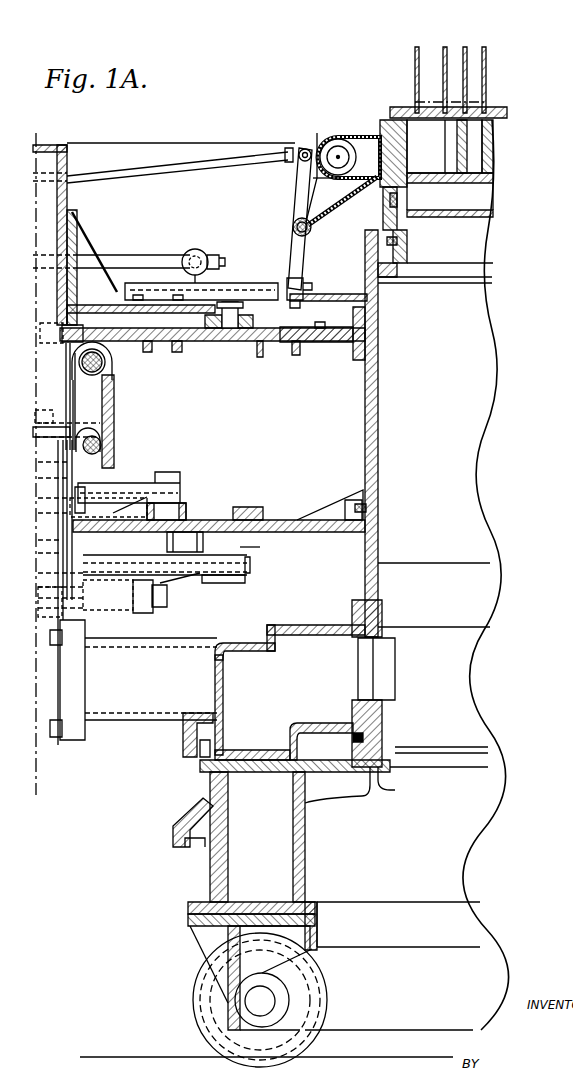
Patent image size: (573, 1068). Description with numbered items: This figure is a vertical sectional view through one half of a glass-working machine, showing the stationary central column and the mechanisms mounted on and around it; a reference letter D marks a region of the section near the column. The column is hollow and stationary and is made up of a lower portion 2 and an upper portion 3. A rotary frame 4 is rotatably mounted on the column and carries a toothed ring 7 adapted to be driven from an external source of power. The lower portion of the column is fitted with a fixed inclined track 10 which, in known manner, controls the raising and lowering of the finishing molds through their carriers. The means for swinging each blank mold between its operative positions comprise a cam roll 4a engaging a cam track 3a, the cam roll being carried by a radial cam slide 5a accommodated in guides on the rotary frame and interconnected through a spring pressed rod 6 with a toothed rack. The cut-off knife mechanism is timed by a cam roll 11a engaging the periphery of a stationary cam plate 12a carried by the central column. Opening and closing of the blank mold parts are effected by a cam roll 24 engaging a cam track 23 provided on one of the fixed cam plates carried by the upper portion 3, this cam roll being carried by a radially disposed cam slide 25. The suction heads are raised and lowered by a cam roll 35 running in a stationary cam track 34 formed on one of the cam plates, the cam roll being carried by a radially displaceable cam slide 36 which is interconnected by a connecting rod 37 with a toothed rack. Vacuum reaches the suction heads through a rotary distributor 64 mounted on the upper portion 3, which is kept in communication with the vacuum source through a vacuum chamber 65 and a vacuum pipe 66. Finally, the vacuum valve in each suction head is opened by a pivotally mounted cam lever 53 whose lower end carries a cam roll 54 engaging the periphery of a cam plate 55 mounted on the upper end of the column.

The lower portion of the central column 2 is at (230, 823).
The upper portion of the central column 3 is at (380, 425).
The cam track 3a is at (240, 547).
The rotary frame 4 is at (187, 680).
The cam roll 4a is at (170, 541).
The radial cam slide 5a is at (173, 588).
The spring pressed rod 6 is at (147, 598).
The toothed ring 7 is at (185, 752).
The fixed inclined track 10 is at (180, 822).
The cam roll 11a is at (78, 326).
The stationary cam plate 12a is at (106, 351).
The cam track 23 is at (197, 517).
The cam roll 24 is at (183, 503).
The radially disposed cam slide 25 is at (128, 483).
The stationary cam track 34 is at (264, 343).
The cam roll 35 is at (215, 343).
The radially displaceable cam slide 36 is at (201, 250).
The connecting rod 37 is at (127, 257).
The cam lever 53 is at (296, 252).
The cam roll 54 is at (318, 344).
The cam plate 55 is at (323, 294).
The rotary distributor 64 is at (380, 119).
The vacuum chamber 65 is at (440, 155).
The vacuum pipe 66 is at (414, 93).
The direction reference D is at (425, 490).